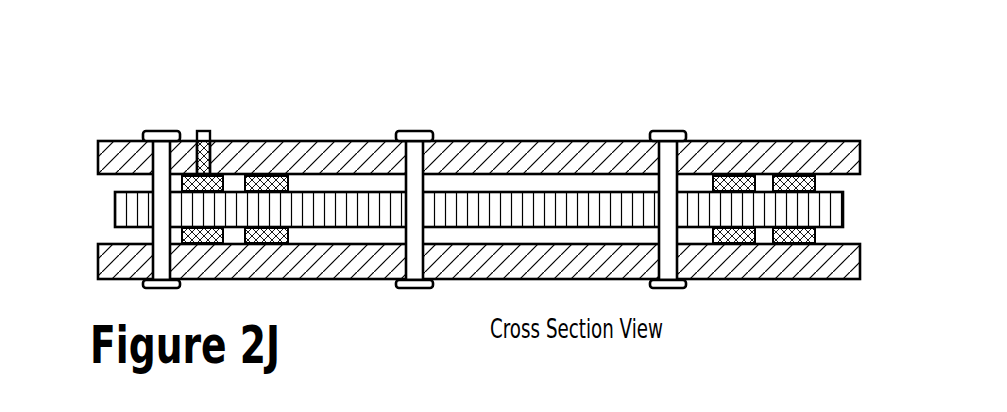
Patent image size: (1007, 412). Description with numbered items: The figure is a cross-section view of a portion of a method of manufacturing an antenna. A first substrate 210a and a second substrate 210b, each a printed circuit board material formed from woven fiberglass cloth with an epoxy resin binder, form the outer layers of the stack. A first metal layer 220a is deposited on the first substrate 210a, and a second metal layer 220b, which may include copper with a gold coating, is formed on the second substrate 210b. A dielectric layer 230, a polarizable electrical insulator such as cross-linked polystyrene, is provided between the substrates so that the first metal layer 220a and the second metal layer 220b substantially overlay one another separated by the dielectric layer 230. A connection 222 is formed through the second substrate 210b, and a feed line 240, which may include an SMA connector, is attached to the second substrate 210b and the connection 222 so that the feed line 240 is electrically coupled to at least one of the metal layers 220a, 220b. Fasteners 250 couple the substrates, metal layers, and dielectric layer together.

The first substrate 210a is at (100, 268).
The second substrate 210b is at (100, 140).
The first metal layer 220a is at (182, 235).
The second metal layer 220b is at (182, 185).
The connection 222 is at (215, 147).
The dielectric layer 230 is at (115, 213).
The feed line 240 is at (224, 126).
The fastener / bolt 250 is at (158, 131).